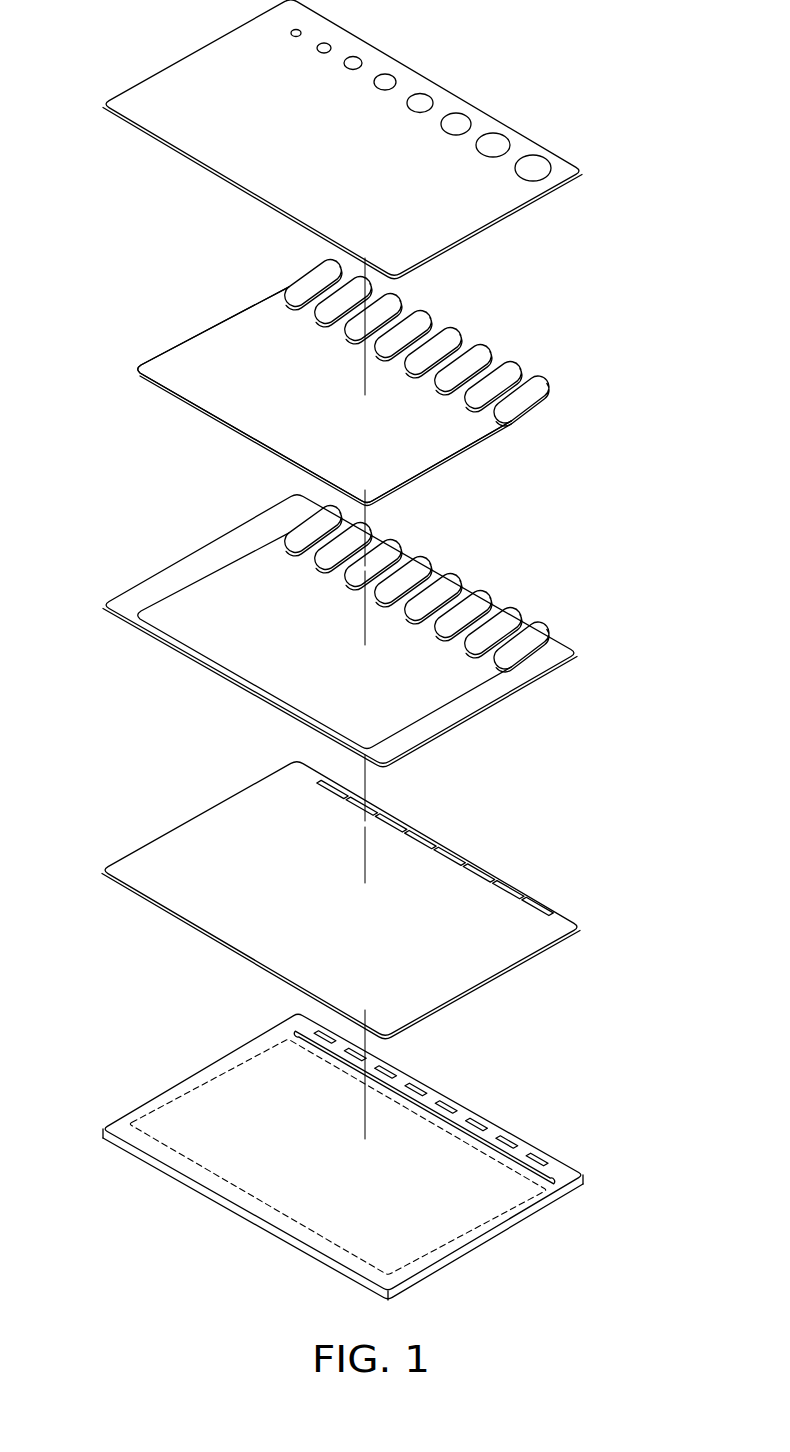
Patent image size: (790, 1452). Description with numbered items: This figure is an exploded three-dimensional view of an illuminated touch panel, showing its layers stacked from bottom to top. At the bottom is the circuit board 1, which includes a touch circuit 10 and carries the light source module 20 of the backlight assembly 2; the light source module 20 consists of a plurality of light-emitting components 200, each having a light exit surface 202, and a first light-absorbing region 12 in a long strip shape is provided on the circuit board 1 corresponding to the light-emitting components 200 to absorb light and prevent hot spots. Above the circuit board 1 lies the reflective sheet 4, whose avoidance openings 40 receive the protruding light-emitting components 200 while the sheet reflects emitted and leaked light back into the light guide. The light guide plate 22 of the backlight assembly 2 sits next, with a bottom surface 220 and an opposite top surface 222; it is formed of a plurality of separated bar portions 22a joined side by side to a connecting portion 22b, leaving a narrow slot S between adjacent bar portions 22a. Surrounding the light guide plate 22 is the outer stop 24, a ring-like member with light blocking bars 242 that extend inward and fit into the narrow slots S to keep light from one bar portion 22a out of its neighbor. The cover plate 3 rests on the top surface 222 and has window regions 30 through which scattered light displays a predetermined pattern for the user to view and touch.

The circuit board 1 is at (350, 1157).
The touch circuit 10 is at (497, 1200).
The first light-absorbing region 12 is at (545, 1175).
The backlight assembly 2 is at (63, 316).
The light source module 20 is at (641, 1115).
The light-emitting components 200 is at (538, 1152).
The light exit surface 202 is at (542, 1161).
The light guide plate 22 is at (134, 368).
The bottom surface 220 is at (140, 385).
The top surface 222 is at (150, 350).
The bar portions 22a is at (524, 405).
The connecting portion 22b is at (438, 456).
The outer stop 24 is at (103, 605).
The light blocking bars 242 is at (518, 624).
The cover plate 3 is at (103, 104).
The window regions 30 is at (538, 158).
The reflective sheet 4 is at (102, 870).
The avoidance openings 40 is at (542, 895).
The narrow slot S is at (524, 371).